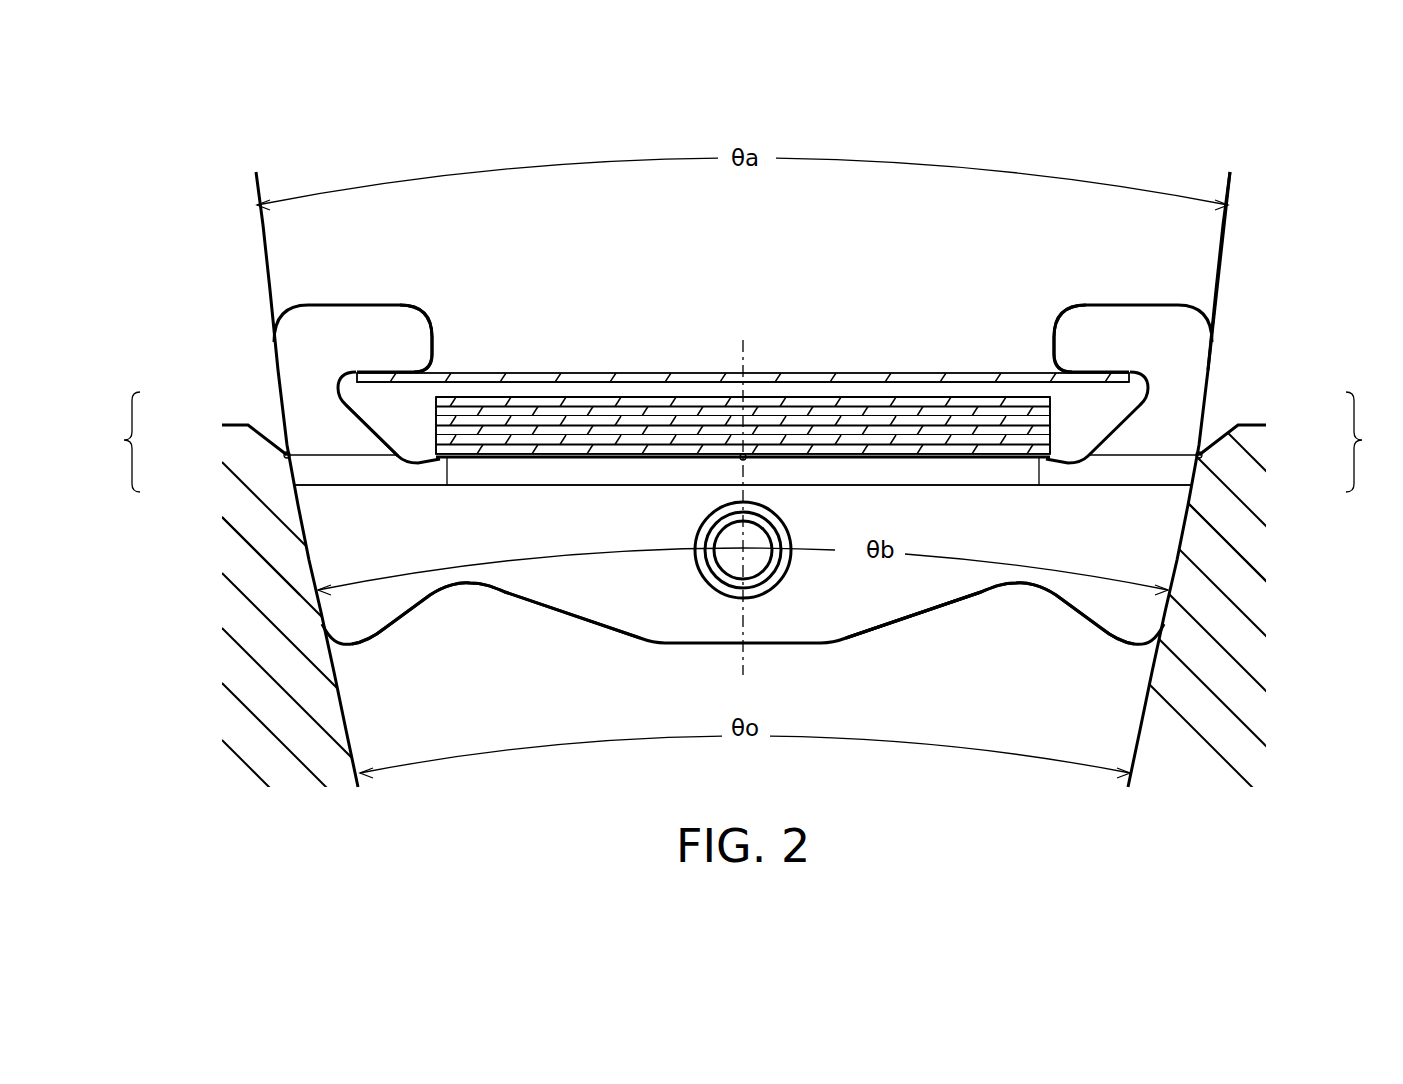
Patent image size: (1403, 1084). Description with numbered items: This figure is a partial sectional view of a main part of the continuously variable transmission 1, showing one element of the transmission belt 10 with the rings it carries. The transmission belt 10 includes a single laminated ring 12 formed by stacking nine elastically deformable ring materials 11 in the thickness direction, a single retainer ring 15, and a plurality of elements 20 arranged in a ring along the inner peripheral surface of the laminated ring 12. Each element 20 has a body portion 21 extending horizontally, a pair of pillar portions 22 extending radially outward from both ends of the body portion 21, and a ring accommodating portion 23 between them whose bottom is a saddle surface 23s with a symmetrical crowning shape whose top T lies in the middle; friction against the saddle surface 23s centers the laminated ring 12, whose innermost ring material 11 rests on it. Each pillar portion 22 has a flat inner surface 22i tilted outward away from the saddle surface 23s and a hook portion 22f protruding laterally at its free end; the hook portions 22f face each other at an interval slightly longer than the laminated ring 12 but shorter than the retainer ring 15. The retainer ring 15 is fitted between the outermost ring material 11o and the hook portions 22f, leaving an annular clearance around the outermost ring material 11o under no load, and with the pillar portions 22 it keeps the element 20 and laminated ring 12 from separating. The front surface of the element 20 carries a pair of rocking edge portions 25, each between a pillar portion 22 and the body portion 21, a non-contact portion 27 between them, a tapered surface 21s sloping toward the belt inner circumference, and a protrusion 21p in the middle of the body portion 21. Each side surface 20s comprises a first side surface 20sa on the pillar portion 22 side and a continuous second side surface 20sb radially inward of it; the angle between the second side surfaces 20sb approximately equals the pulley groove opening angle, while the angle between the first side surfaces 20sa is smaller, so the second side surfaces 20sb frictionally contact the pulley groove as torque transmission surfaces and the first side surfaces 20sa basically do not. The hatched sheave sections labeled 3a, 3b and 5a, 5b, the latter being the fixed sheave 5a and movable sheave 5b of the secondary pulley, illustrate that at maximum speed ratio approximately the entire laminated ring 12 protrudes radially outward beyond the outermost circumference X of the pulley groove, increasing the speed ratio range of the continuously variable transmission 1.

The continuously variable transmission 1 is at (1236, 330).
The transmission belt 10 is at (790, 343).
The ring material 11 is at (1050, 433).
The outermost ring material 11o is at (845, 397).
The laminated ring 12 is at (952, 392).
The retainer ring 15 is at (585, 378).
The element 20 is at (547, 609).
The side surface 20s is at (741, 442).
The first side surface 20sa is at (284, 374).
The second side surface 20sb is at (305, 558).
The body portion 21 is at (849, 585).
The tapered surface 21s is at (576, 536).
The protrusion 21p is at (722, 552).
The pillar portion 22 is at (344, 328).
The inner surface 22i is at (357, 420).
The hook portion 22f is at (414, 337).
The ring accommodating portion 23 is at (419, 424).
The saddle surface 23s is at (495, 453).
The rocking edge portion 25 is at (390, 476).
The non-contact portion 27 is at (935, 560).
The first housing portion 3a is at (1253, 722).
The second housing portion 3b is at (232, 714).
The fixed sheave 5a is at (1200, 515).
The movable sheave 5b is at (261, 556).